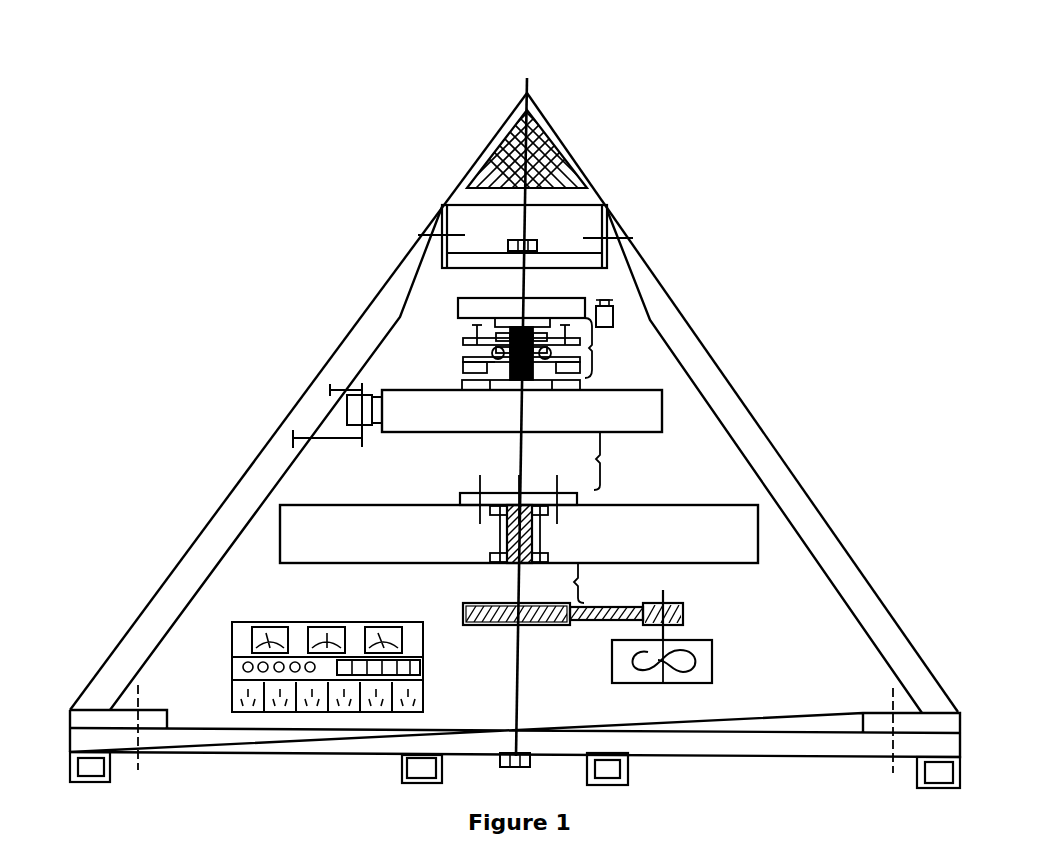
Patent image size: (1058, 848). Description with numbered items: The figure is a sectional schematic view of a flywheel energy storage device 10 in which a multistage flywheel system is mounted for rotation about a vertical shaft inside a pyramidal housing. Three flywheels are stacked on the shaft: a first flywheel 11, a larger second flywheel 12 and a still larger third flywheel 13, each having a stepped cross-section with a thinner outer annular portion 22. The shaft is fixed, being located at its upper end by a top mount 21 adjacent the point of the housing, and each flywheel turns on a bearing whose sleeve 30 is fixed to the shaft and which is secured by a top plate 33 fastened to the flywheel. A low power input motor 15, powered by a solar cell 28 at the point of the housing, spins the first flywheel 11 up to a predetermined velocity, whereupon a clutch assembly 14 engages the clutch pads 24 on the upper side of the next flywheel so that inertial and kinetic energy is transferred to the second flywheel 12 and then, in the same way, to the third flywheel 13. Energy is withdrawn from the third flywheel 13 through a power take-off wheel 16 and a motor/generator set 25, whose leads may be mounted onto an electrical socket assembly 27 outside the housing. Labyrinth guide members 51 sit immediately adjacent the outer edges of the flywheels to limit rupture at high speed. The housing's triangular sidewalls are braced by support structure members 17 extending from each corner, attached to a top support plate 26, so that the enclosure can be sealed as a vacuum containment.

The energy storage device 10 is at (415, 160).
The first flywheel 11 is at (588, 298).
The second flywheel 12 is at (645, 407).
The third flywheel 13 is at (720, 531).
The clutch assembly 14 is at (607, 348).
The low power input motor 15 is at (620, 313).
The power take-off wheel 16 is at (480, 630).
The support structure members 17 is at (878, 650).
The top mount 21 is at (540, 238).
The outer annular portion 22 is at (537, 760).
The clutch pad 24 is at (462, 358).
The motor/generator set 25 is at (742, 403).
The top support plate 26 is at (613, 232).
The electrical socket assembly 27 is at (285, 713).
The solar cell 28 is at (565, 135).
The sleeve 30 is at (500, 535).
The top plate 33 is at (460, 497).
The labyrinth guide member 51 is at (343, 405).